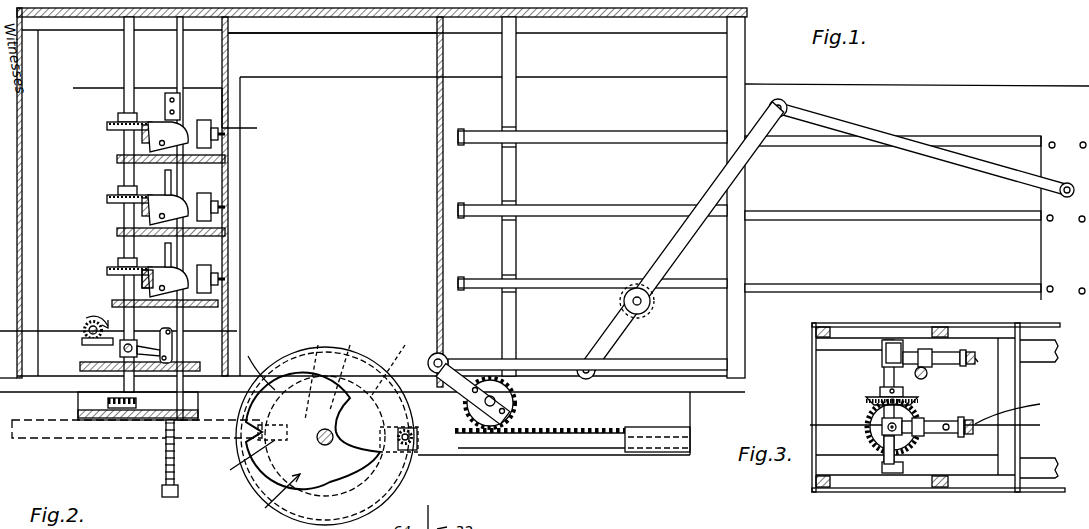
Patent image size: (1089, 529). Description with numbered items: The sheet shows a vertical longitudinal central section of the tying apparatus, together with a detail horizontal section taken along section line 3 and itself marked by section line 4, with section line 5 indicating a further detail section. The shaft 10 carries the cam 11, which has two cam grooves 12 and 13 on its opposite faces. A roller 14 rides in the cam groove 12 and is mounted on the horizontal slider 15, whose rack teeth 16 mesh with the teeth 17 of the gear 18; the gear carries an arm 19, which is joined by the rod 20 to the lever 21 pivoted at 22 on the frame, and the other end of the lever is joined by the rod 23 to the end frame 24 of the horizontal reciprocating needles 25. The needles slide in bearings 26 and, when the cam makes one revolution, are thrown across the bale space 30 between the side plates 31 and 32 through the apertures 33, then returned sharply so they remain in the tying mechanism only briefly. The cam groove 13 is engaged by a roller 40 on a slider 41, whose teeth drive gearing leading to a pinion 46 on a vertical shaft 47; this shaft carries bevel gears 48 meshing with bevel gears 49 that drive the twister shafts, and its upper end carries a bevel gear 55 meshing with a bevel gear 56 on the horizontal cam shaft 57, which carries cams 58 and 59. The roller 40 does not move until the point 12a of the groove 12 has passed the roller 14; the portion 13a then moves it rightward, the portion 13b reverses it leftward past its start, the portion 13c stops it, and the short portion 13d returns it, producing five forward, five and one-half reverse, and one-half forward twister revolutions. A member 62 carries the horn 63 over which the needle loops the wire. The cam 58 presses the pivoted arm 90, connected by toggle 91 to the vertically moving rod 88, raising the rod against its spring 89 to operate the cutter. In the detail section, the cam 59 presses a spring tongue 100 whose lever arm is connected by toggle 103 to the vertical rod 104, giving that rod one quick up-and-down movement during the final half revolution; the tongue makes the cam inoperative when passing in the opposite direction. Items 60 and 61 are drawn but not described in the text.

In FIG. 1, the section line 3- 3 is at (208, 340).
In FIG. 3, the section line 4- 4 is at (797, 418).
In FIG. 1, the section line 5- 5 is at (73, 90).
In FIG. 1, the shaft 10 is at (325, 445).
In FIG. 1, the cam 11 is at (274, 498).
In FIG. 1, the cam groove 12 is at (362, 370).
In FIG. 1, the point in cam groove 12a is at (316, 365).
In FIG. 1, the cam groove 13 is at (272, 358).
In FIG. 1, the portion of cam groove 13a is at (398, 352).
In FIG. 1, the portion of cam groove 13b is at (347, 360).
In FIG. 1, the portion of cam groove 13c is at (259, 366).
In FIG. 1, the short portion of cam groove 13d is at (268, 432).
In FIG. 1, the roller 14 is at (420, 465).
In FIG. 1, the horizontal slider 15 is at (512, 449).
In FIG. 1, the rack teeth 16 is at (556, 433).
In FIG. 1, the gear teeth 17 is at (516, 410).
In FIG. 1, the gear 18 is at (474, 394).
In FIG. 1, the arm 19 is at (446, 377).
In FIG. 1, the rod 20 is at (530, 362).
In FIG. 1, the lever 21 is at (680, 232).
In FIG. 1, the pivot 22 is at (650, 301).
In FIG. 1, the rod 23 is at (870, 133).
In FIG. 1, the end frame 24 is at (1071, 178).
In FIG. 1, the needles 25 is at (836, 210).
In FIG. 1, the bearings 26 is at (516, 135).
In FIG. 1, the bale space 30 is at (290, 226).
In FIG. 1, the side plate 31 is at (229, 62).
In FIG. 1, the side plate 32 is at (437, 58).
In FIG. 1, the apertures 33 is at (437, 135).
In FIG. 1, the roller 40 is at (239, 464).
In FIG. 1, the slider 41 is at (53, 438).
In FIG. 1, the pinion 46 is at (78, 404).
In FIG. 1, the vertical shaft 47 is at (124, 284).
In FIG. 3, the vertical shaft 47 is at (929, 381).
In FIG. 1, the bevel gears 48 is at (107, 126).
In FIG. 1, the bevel gears 49 is at (142, 135).
In FIG. 3, the bevel gear 55 is at (868, 432).
In FIG. 3, the bevel gear 56 is at (866, 404).
In FIG. 1, the horizontal cam shaft 57 is at (82, 340).
In FIG. 3, the horizontal cam shaft 57 is at (903, 455).
In FIG. 1, the cam 58 is at (84, 322).
In FIG. 3, the cam 58 is at (900, 358).
In FIG. 3, the cam 59 is at (888, 430).
In FIG. 1, the pawl 60 is at (158, 125).
In FIG. 1, the link 61 is at (154, 336).
In FIG. 1, the member 62 is at (172, 268).
In FIG. 1, the horn 63 is at (165, 197).
In FIG. 1, the vertically moving rod 88 is at (184, 60).
In FIG. 3, the vertically moving rod 88 is at (975, 360).
In FIG. 1, the spring 89 is at (166, 458).
In FIG. 1, the pivoted arm 90 is at (120, 352).
In FIG. 3, the pivoted arm 90 is at (945, 355).
In FIG. 1, the toggle 91 is at (155, 350).
In FIG. 3, the spring tongue 100 is at (912, 424).
In FIG. 3, the toggle 103 is at (973, 435).
In FIG. 3, the vertical rod 104 is at (1019, 410).